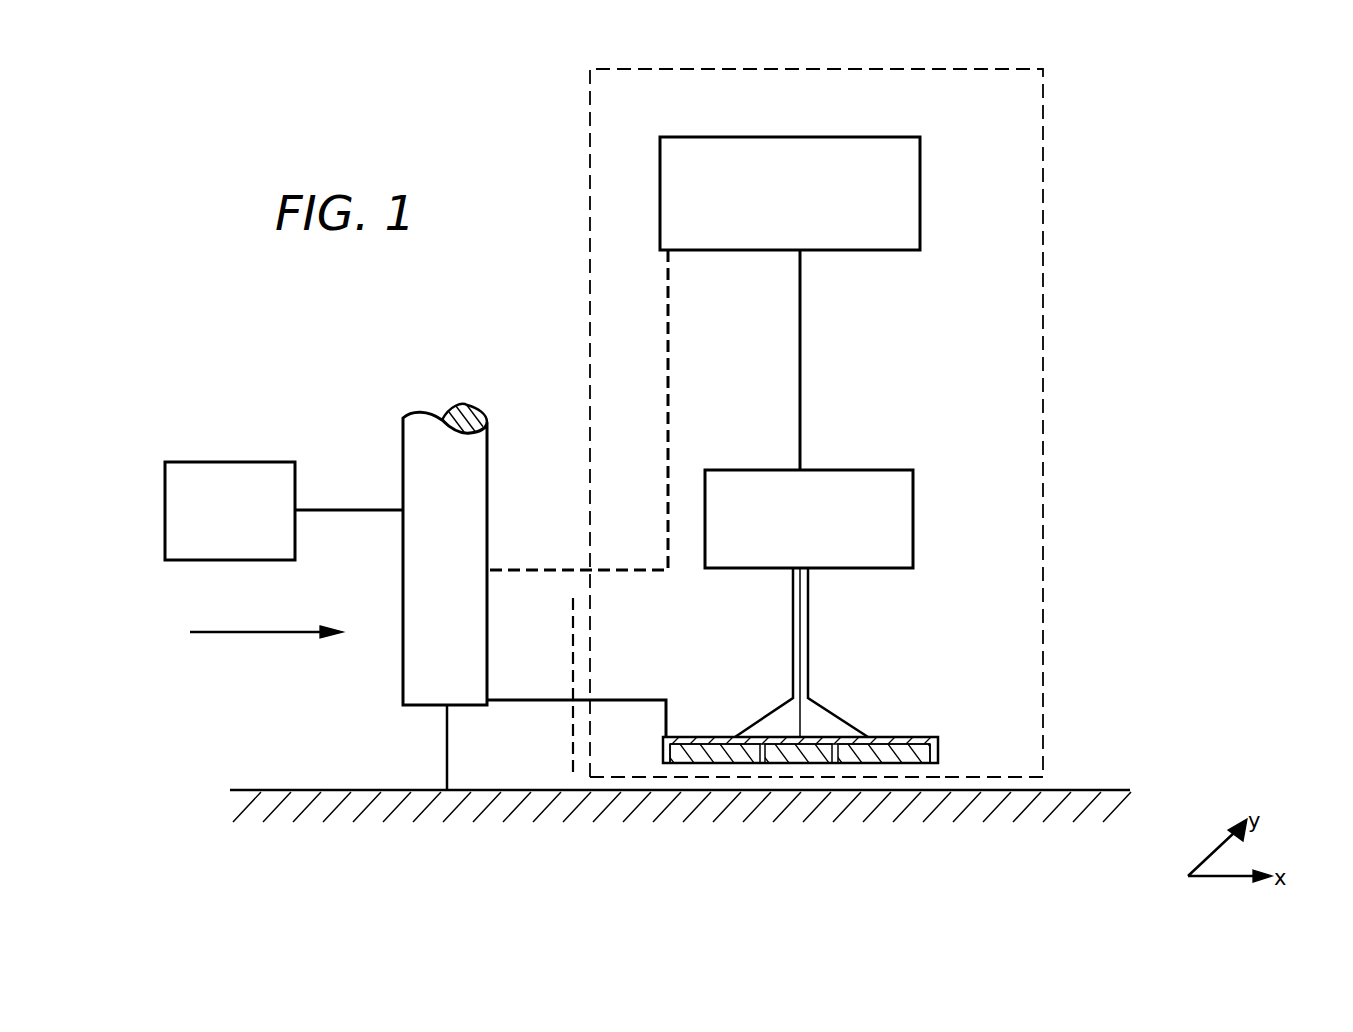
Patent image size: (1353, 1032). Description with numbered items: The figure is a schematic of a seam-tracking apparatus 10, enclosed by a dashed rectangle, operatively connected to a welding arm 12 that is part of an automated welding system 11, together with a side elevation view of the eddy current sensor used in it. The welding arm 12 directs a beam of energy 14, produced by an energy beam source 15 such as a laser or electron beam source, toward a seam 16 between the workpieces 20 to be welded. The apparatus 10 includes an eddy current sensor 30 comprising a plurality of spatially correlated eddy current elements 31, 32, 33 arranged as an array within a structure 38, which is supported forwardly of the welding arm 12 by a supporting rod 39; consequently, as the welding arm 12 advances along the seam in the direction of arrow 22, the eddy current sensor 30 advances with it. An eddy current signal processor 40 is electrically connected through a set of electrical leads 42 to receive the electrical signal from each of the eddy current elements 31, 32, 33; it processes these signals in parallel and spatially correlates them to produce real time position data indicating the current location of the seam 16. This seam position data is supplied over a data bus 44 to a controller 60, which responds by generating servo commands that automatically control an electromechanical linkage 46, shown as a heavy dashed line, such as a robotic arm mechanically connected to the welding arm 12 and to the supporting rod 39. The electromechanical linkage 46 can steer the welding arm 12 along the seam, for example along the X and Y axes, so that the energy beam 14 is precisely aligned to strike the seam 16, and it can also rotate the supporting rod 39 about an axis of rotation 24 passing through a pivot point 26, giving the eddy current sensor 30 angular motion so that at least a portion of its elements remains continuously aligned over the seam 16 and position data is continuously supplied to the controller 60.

The seam-tracking apparatus 10 is at (822, 110).
The automated welding system 11 is at (344, 394).
The welding arm 12 is at (403, 580).
The beam of energy 14 is at (447, 752).
The energy beam source 15 is at (240, 462).
The seam 16 is at (413, 790).
The workpieces 20 is at (497, 862).
The arrow 22 is at (266, 618).
The axis of rotation 24 is at (573, 622).
The pivot point 26 is at (562, 698).
The eddy current sensor 30 is at (848, 714).
The eddy current element 31 is at (720, 767).
The eddy current element 32 is at (808, 767).
The eddy current element 33 is at (895, 767).
The structure 38 is at (960, 775).
The supporting rod 39 is at (640, 698).
The eddy current signal processor 40 is at (913, 530).
The electrical leads 42 is at (791, 607).
The data bus 44 is at (800, 336).
The electromechanical linkage 46 is at (668, 376).
The controller 60 is at (920, 210).